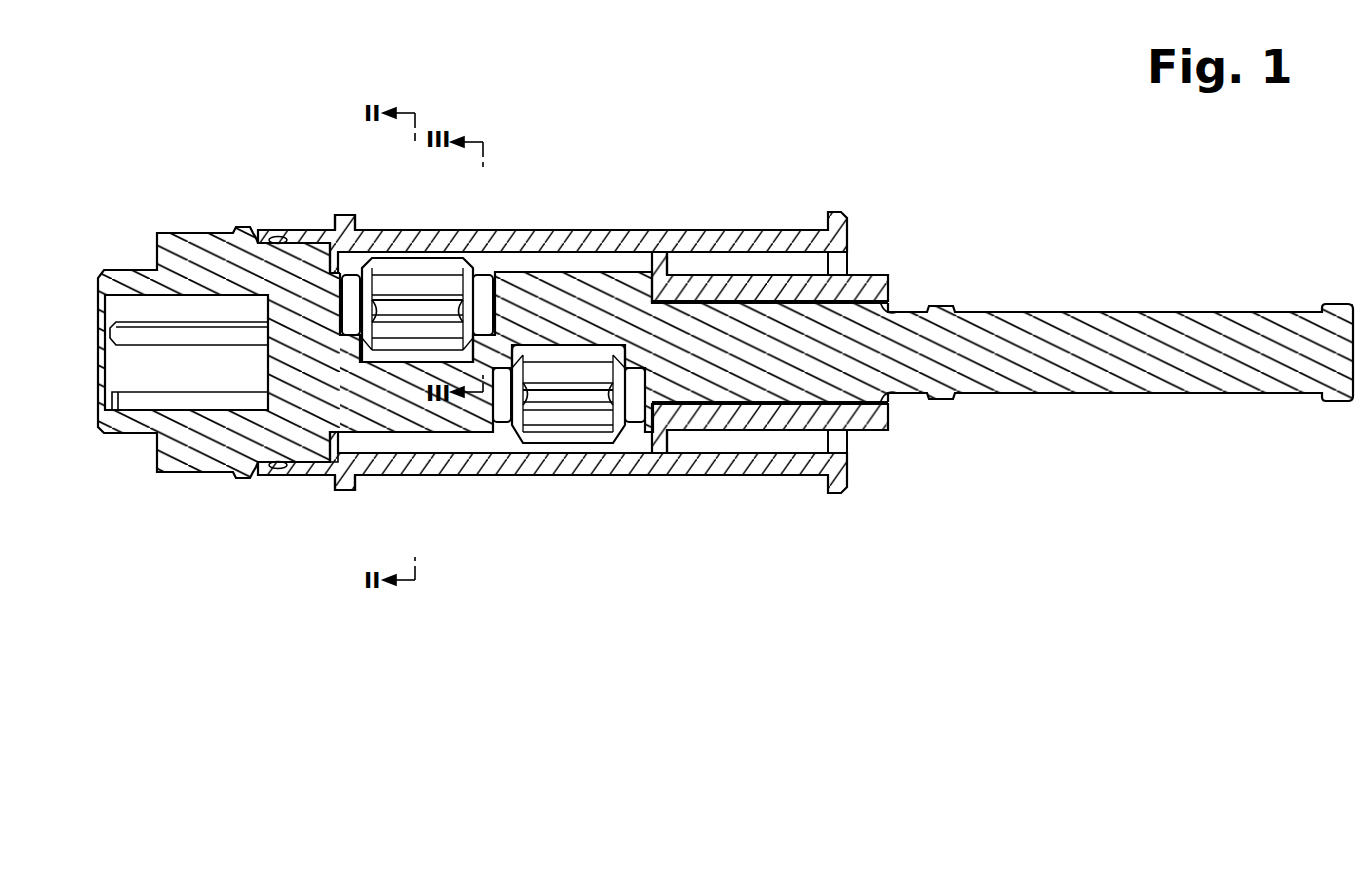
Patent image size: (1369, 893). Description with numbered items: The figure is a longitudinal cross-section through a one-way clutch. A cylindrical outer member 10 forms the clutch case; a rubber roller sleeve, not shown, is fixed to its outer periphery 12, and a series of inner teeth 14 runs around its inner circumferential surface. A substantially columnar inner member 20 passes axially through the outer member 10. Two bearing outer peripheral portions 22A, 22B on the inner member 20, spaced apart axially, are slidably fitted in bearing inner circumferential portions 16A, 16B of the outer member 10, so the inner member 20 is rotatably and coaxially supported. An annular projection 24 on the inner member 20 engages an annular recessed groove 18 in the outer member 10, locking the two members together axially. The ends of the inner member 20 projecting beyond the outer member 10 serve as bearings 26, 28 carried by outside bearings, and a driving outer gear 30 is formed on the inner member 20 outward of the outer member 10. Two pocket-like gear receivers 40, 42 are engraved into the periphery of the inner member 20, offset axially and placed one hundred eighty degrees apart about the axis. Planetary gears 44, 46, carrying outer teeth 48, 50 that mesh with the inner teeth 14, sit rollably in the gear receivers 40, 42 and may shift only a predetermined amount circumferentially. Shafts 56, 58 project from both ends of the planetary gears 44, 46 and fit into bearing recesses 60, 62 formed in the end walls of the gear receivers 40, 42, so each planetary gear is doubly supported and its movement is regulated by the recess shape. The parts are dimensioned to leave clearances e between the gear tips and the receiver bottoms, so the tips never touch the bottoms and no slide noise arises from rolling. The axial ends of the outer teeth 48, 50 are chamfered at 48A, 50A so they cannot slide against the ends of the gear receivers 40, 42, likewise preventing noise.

The outer member 10 is at (613, 226).
The outer periphery 12 is at (758, 231).
The inner teeth 14 is at (440, 447).
The bearing inner circumferential portion 16A is at (326, 466).
The bearing inner circumferential portion 16B is at (893, 305).
The annular recessed groove 18 is at (272, 238).
The inner member 20 is at (548, 264).
The bearing outer peripheral portion 22A is at (300, 231).
The bearing outer peripheral portion 22B is at (889, 418).
The annular projection 24 is at (275, 470).
The bearing 26 is at (115, 375).
The bearing 28 is at (1105, 327).
The driving outer gear 30 is at (190, 233).
The gear receiver 40 is at (395, 372).
The gear receiver 42 is at (630, 300).
The planetary gear 44 is at (423, 264).
The planetary gear 46 is at (575, 460).
The outer teeth 48 is at (397, 310).
The chamfered shape 48A is at (371, 298).
The outer teeth 50 is at (582, 398).
The chamfered shape 50A is at (520, 398).
The shaft 56 is at (347, 214).
The shaft 58 is at (510, 432).
The bearing recess 60 is at (488, 297).
The bearing recess 62 is at (500, 420).
The clearance e is at (398, 436).